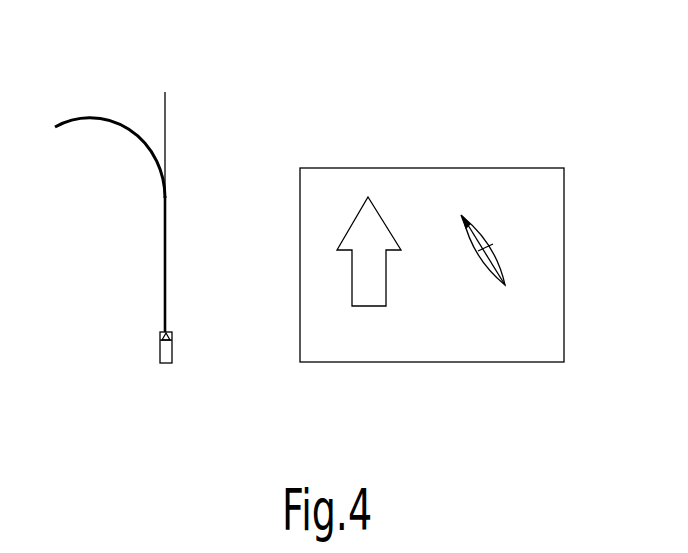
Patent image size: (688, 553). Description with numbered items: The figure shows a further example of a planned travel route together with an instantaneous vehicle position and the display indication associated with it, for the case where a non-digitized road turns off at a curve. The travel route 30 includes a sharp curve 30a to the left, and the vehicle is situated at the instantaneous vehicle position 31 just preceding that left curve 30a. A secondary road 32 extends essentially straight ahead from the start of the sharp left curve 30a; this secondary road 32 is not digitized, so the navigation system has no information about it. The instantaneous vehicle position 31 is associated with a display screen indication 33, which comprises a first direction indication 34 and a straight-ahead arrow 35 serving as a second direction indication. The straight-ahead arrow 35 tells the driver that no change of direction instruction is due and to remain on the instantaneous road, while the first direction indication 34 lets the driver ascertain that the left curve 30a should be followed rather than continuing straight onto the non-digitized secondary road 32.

The travel route 30 is at (165, 295).
The sharp curve 30a is at (107, 120).
The instantaneous vehicle position 31 is at (165, 332).
The secondary road 32 is at (165, 138).
The display screen indication 33 is at (515, 177).
The first direction indication 34 is at (493, 255).
The straight-ahead arrow 35 is at (370, 270).